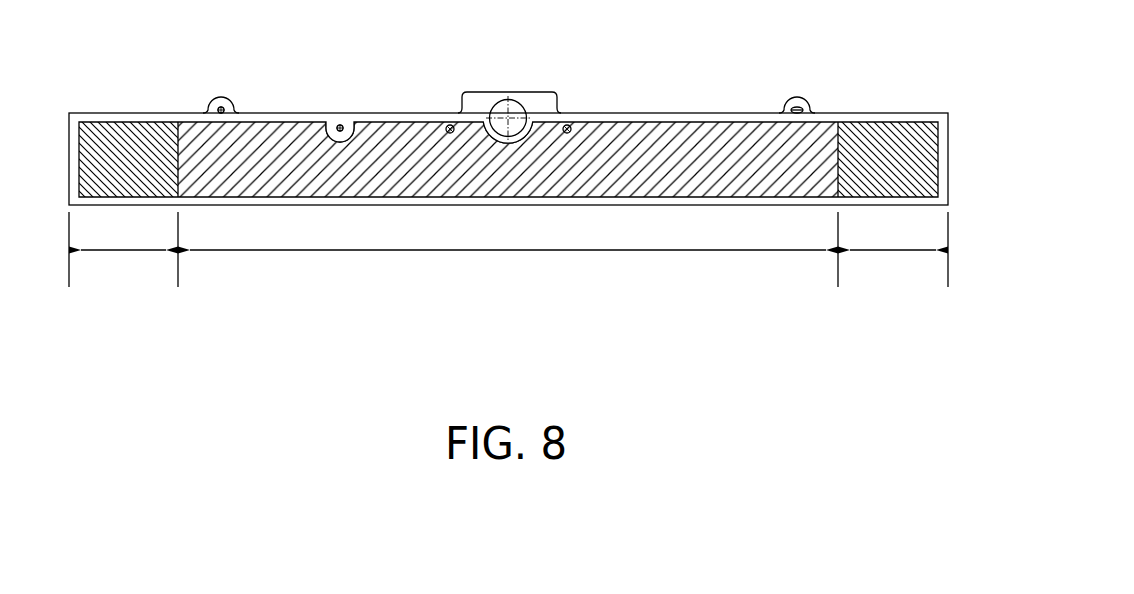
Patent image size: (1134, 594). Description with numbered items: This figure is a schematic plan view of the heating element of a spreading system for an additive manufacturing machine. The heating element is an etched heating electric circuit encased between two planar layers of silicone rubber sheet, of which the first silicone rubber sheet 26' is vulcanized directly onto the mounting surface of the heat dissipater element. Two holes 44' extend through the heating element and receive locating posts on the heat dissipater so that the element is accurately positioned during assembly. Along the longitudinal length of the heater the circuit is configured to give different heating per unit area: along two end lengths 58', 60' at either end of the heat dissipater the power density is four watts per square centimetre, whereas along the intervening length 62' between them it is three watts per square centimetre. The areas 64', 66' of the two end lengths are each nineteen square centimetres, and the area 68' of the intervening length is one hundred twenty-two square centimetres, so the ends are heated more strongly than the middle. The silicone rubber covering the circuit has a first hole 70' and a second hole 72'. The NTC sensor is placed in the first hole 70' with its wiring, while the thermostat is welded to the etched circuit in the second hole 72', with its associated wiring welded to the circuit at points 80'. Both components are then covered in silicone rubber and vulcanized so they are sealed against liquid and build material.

The first silicone rubber sheet 26' is at (508, 129).
The holes 44' is at (531, 84).
The end length 58' is at (123, 285).
The end length 60' is at (893, 285).
The intervening length 62' is at (508, 303).
The area of end length 64' is at (170, 240).
The area of end length 66' is at (913, 133).
The area of intervening length 68' is at (508, 240).
The first hole 70' is at (365, 93).
The second hole 72' is at (509, 225).
The points 80' is at (534, 93).